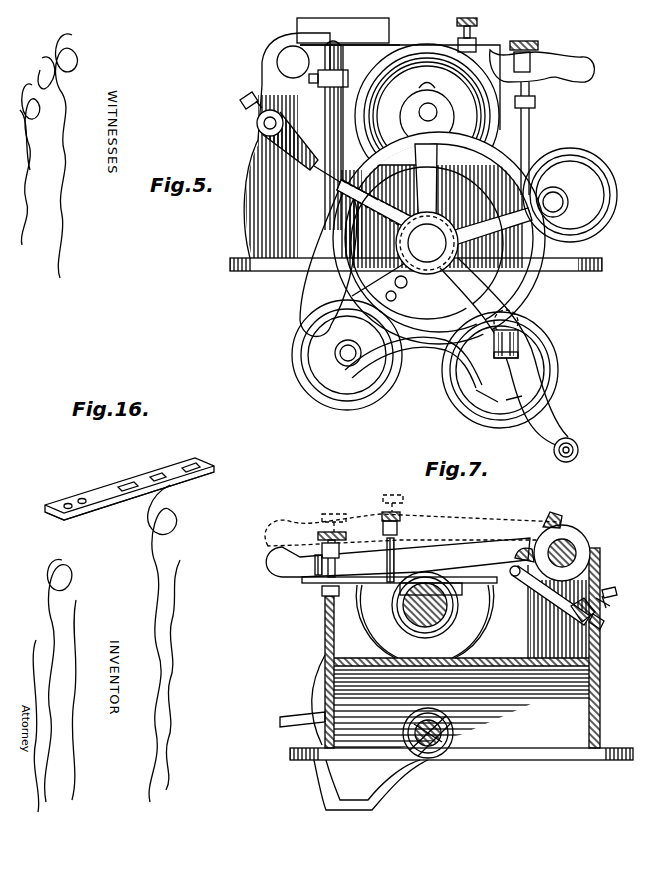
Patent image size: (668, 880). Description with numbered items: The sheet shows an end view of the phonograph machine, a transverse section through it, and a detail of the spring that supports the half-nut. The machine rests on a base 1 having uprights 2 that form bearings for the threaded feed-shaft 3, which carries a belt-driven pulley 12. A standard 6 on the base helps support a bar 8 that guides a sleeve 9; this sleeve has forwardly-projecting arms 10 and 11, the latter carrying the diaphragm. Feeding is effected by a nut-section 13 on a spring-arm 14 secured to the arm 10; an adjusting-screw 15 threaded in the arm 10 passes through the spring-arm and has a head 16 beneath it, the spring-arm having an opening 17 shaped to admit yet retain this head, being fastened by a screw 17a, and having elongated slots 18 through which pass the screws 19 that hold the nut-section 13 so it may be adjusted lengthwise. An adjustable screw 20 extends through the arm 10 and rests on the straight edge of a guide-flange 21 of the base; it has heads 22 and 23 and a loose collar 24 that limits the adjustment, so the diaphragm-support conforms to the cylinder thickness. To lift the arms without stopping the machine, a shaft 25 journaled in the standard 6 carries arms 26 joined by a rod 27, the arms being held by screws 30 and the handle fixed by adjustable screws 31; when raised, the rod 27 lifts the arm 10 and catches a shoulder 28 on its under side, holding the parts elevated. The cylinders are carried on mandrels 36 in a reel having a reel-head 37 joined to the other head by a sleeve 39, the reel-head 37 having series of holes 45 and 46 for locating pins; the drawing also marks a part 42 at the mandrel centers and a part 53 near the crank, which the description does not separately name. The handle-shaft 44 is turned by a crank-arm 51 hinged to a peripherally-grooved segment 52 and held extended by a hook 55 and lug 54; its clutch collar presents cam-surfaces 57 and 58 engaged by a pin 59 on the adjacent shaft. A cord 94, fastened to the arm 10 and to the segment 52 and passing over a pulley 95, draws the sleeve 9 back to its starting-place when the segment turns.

In FIG. 7, the base 1 is at (530, 748).
In FIG. 5, the uprights 2 is at (422, 192).
In FIG. 7, the threaded feed-shaft 3 is at (412, 624).
In FIG. 5, the standard 6 is at (262, 155).
In FIG. 7, the standard 6 is at (589, 642).
In FIG. 5, the bar 8 is at (293, 62).
In FIG. 5, the sleeve 9 is at (300, 33).
In FIG. 5, the arm 10 is at (385, 48).
In FIG. 5, the arm 11 is at (389, 22).
In FIG. 5, the pulley 12 is at (427, 116).
In FIG. 7, the pulley 12 is at (500, 638).
In FIG. 7, the nut-section 13 is at (462, 590).
In FIG. 7, the spring-arm 14 is at (360, 583).
In FIG. 16, the spring-arm 14 is at (56, 516).
In FIG. 5, the adjusting-screw 15 is at (477, 22).
In FIG. 7, the adjusting-screw 15 is at (400, 514).
In FIG. 7, the head 16 is at (390, 583).
In FIG. 16, the opening 17 is at (128, 484).
In FIG. 7, the screw 17a is at (318, 577).
In FIG. 16, the elongated slots 18 is at (190, 465).
In FIG. 7, the screws 19 is at (440, 556).
In FIG. 5, the adjustable screw 20 is at (555, 55).
In FIG. 7, the adjustable screw 20 is at (360, 524).
In FIG. 5, the guide-flange 21 is at (529, 128).
In FIG. 7, the guide-flange 21 is at (325, 655).
In FIG. 5, the head 22 is at (535, 42).
In FIG. 7, the head 22 is at (328, 533).
In FIG. 5, the head 23 is at (535, 102).
In FIG. 7, the head 23 is at (322, 592).
In FIG. 5, the loose collar 24 is at (481, 42).
In FIG. 7, the loose collar 24 is at (322, 548).
In FIG. 7, the shaft 25 is at (575, 618).
In FIG. 7, the arms 26 is at (604, 626).
In FIG. 7, the rod 27 is at (532, 590).
In FIG. 7, the shoulder 28 is at (535, 540).
In FIG. 7, the screws 30 is at (610, 604).
In FIG. 5, the adjustable screws 31 is at (238, 97).
In FIG. 7, the adjustable screws 31 is at (617, 591).
In FIG. 5, the mandrels 36 is at (617, 200).
In FIG. 5, the reel-head 37 is at (262, 128).
In FIG. 5, the sleeve 39 is at (322, 178).
In FIG. 5, the pulley hub 42 is at (556, 200).
In FIG. 5, the handle-shaft 44 is at (427, 243).
In FIG. 5, the holes 45 is at (396, 296).
In FIG. 5, the holes 46 is at (407, 282).
In FIG. 5, the crank-arm 51 is at (530, 412).
In FIG. 5, the peripherally-grooved segment 52 is at (363, 175).
In FIG. 7, the peripherally-grooved segment 52 is at (310, 700).
In FIG. 5, the pin 53 is at (520, 337).
In FIG. 5, the lug 54 is at (506, 402).
In FIG. 5, the hook 55 is at (474, 392).
In FIG. 7, the cam-surface 57 is at (438, 716).
In FIG. 7, the cam-surface 58 is at (440, 762).
In FIG. 7, the pin 59 is at (404, 740).
In FIG. 5, the cord 94 is at (305, 290).
In FIG. 5, the pulley 95 is at (325, 100).